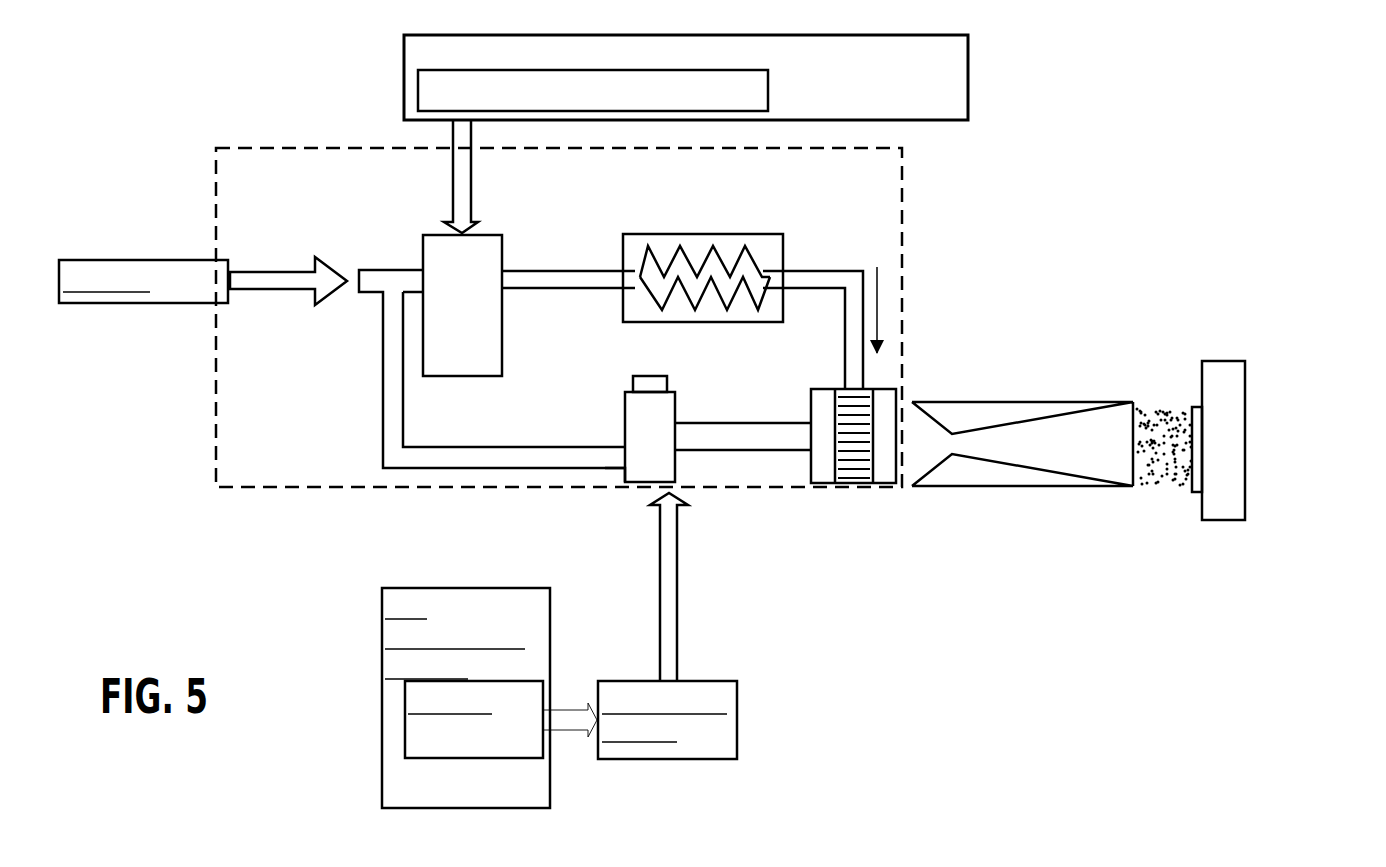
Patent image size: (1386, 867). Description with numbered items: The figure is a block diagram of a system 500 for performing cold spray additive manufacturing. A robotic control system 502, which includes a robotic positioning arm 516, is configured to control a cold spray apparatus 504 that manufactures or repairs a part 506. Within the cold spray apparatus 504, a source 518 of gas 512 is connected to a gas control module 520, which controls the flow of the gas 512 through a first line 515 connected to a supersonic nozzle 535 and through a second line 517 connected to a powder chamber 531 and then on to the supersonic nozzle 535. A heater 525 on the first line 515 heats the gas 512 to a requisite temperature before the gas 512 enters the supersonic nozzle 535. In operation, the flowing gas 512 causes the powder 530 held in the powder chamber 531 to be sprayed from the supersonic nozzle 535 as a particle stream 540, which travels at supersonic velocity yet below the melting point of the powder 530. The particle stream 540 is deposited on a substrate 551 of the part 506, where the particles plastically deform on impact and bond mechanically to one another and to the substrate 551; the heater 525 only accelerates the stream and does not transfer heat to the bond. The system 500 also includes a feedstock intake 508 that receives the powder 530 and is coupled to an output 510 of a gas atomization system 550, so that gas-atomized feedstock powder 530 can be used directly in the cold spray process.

The system 500 is at (1324, 149).
The robotic control system 502 is at (748, 67).
The cold spray apparatus 504 is at (520, 177).
The part 506 is at (1200, 533).
The feedstock intake 508 is at (885, 506).
The output 510 is at (501, 719).
The gas 512 is at (356, 256).
The first line 515 is at (543, 262).
The robotic positioning arm 516 is at (757, 99).
The second line 517 is at (585, 411).
The source 518 is at (203, 281).
The gas control module 520 is at (475, 384).
The heater 525 is at (626, 223).
The powder 530 is at (648, 497).
The powder chamber 531 is at (617, 475).
The supersonic nozzle 535 is at (945, 524).
The particle stream 540 is at (1158, 404).
The gas atomization system 550 is at (489, 698).
The substrate 551 is at (1193, 401).